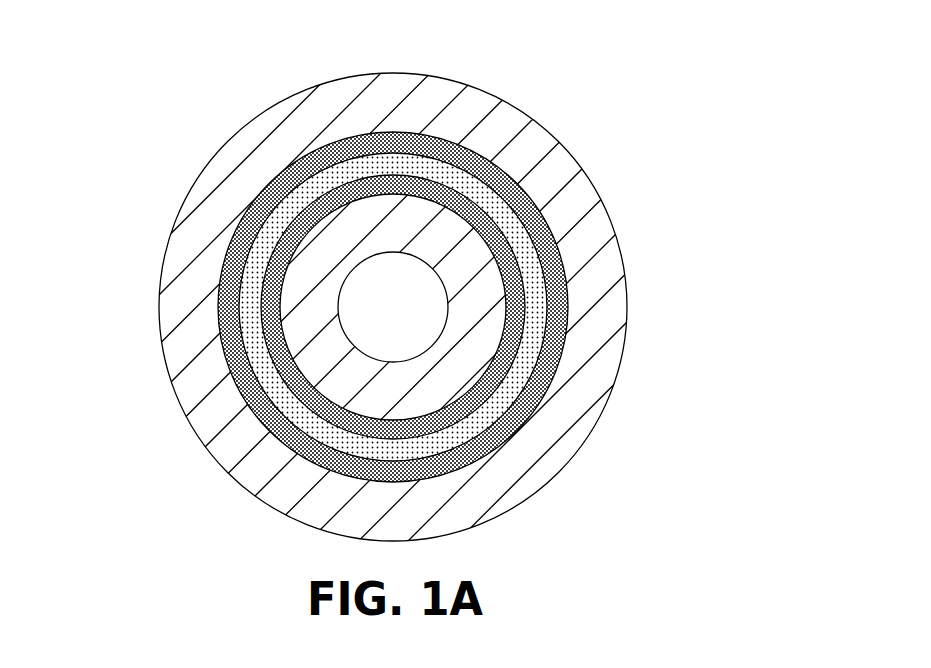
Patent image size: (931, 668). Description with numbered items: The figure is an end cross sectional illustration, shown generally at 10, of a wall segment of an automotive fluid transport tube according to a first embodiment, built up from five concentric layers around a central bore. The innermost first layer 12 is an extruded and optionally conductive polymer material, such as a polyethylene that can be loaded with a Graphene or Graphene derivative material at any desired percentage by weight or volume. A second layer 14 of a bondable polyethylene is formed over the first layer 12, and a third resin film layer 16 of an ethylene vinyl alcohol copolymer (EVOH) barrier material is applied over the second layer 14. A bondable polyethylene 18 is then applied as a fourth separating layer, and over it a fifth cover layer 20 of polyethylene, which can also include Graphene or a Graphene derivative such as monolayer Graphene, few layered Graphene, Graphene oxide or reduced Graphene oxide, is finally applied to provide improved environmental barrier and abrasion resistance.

The wall segment of automotive fluid transport tube 10 is at (465, 295).
The first layer 12 is at (308, 372).
The second layer 14 is at (265, 341).
The third resin film layer 16 is at (245, 328).
The bondable PE fourth separating layer 18 is at (220, 283).
The fifth cover layer 20 is at (170, 226).